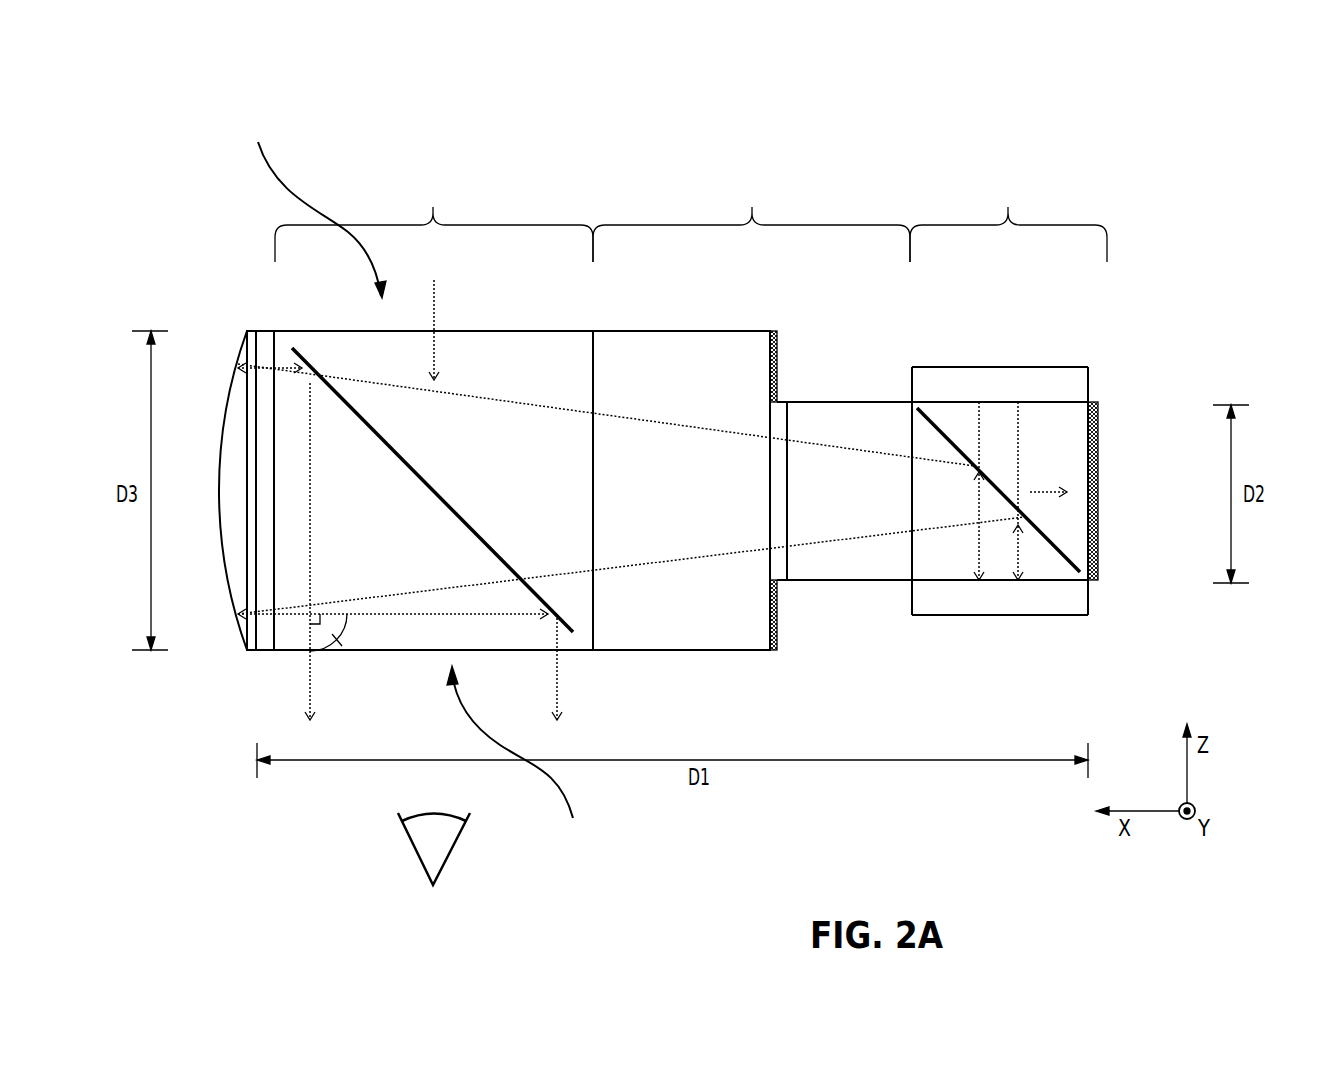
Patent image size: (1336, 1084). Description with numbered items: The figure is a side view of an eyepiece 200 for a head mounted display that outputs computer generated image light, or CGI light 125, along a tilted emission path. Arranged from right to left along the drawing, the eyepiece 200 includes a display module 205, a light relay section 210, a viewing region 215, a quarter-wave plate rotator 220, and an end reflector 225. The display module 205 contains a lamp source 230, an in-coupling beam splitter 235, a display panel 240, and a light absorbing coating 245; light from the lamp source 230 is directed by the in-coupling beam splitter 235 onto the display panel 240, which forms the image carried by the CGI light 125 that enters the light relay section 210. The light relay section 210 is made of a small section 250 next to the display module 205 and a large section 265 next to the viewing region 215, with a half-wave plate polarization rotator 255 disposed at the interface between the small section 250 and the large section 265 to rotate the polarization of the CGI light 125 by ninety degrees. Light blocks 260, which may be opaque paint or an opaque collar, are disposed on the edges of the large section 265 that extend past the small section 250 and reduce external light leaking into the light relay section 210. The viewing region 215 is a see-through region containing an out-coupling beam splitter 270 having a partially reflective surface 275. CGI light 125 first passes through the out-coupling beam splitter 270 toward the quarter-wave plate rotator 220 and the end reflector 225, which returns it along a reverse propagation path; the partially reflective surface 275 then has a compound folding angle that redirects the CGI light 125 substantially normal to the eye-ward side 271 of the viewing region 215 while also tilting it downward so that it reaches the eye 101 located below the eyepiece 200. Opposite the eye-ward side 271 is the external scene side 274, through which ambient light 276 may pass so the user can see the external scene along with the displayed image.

The eyepiece 200 is at (1216, 131).
The display module 205 is at (1008, 376).
The light relay section 210 is at (752, 363).
The viewing region 215 is at (434, 204).
The quarter-wave plate rotator 220 is at (256, 331).
The end reflector 225 is at (240, 637).
The lamp source 230 is at (1045, 367).
The in-coupling beam splitter 235 is at (1068, 435).
The display panel 240 is at (1013, 611).
The light absorbing coating 245 is at (1098, 508).
The small section 250 is at (893, 435).
The half-wave plate polarization rotator 255 is at (787, 565).
The light blocks 260 is at (778, 347).
The large section 265 is at (748, 368).
The out-coupling beam splitter 270 is at (565, 368).
The eye-ward side 271 is at (535, 773).
The external scene side 274 is at (281, 191).
The partially reflective surface 275 is at (432, 490).
The ambient light 276 is at (445, 310).
The CGI light 125 is at (686, 426).
The eye 101 is at (448, 845).